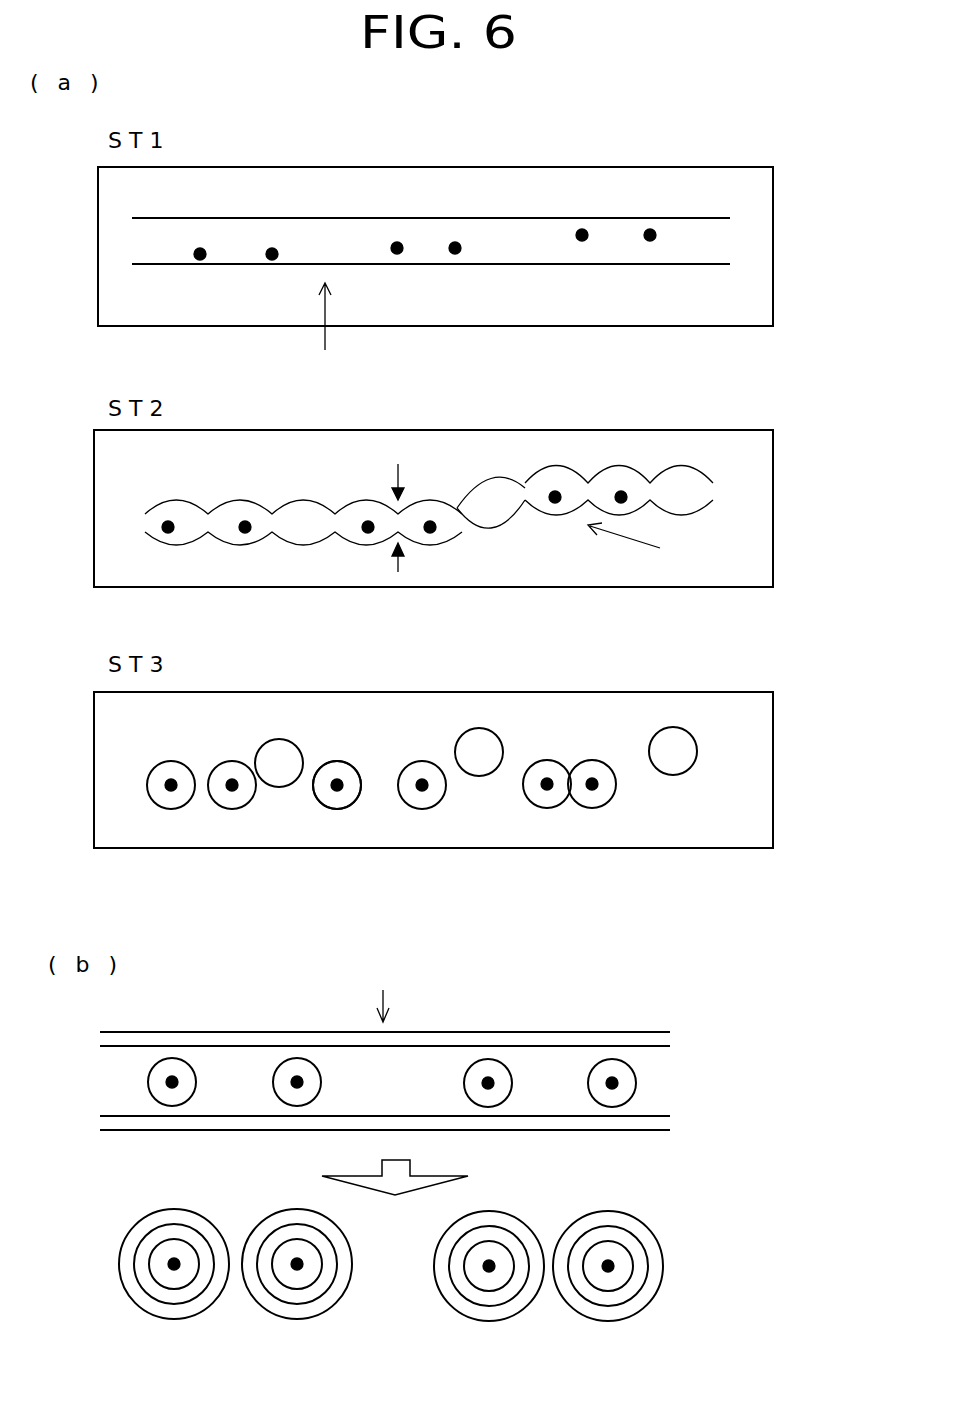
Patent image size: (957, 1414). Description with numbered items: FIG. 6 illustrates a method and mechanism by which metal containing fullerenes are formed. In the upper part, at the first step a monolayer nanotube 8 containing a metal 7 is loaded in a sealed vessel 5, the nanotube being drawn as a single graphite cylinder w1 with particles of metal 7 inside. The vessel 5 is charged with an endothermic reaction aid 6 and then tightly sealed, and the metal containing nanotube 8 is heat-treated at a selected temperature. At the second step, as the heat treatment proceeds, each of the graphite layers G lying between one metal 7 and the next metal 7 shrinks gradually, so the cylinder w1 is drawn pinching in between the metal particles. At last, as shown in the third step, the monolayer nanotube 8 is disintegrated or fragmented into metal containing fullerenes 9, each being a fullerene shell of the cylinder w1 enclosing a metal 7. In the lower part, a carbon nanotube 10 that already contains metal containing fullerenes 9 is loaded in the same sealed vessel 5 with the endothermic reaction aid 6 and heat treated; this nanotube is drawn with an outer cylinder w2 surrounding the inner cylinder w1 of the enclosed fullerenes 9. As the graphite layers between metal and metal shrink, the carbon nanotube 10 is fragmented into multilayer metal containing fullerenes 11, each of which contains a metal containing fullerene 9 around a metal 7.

The sealed vessel 5 is at (573, 168).
The endothermic reaction aid 6 is at (398, 192).
The metal 7 is at (270, 250).
The monolayer nanotube 8 is at (497, 423).
The metal containing fullerenes 9 is at (343, 746).
The carbon nanotube 10 is at (383, 993).
The multilayer metal containing fullerenes 11 is at (351, 1307).
The cylinder w1 is at (482, 218).
The cylinder w2 is at (443, 1031).
The graphite layers G is at (408, 509).